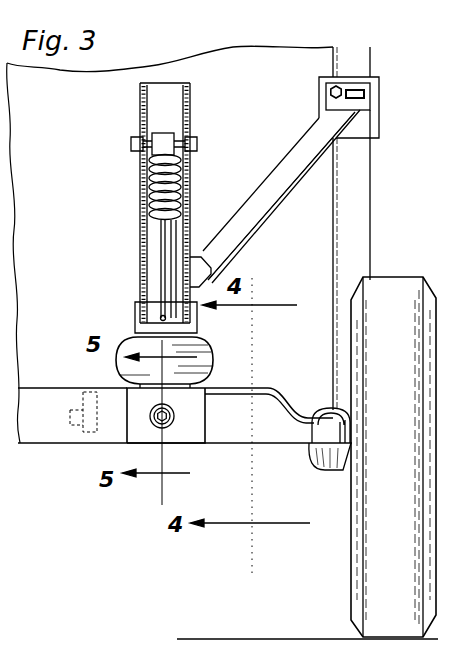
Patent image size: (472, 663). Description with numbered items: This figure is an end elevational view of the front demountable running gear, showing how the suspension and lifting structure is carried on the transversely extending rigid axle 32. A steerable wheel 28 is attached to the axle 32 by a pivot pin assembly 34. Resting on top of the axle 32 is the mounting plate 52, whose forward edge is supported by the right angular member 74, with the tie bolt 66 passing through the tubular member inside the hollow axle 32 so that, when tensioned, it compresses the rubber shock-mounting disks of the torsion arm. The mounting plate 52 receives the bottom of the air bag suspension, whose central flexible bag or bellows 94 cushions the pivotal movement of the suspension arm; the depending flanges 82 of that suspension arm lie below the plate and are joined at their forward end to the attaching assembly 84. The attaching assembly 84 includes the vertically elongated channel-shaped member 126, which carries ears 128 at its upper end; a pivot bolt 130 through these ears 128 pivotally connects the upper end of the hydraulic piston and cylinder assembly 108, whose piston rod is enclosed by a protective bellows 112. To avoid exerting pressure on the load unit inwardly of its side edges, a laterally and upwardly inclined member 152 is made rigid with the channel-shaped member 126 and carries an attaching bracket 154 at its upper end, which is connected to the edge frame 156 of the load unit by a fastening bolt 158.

The steerable wheels 28 is at (369, 567).
The rigid axle 32 is at (47, 422).
The pivot pin assemblies 34 is at (324, 463).
The mounting plate 52 is at (137, 388).
The tie bolt 66 is at (178, 415).
The right angular member 74 is at (188, 440).
The depending flanges 82 is at (229, 651).
The attaching assembly 84 is at (127, 122).
The flexible bag or bellows 94 is at (125, 368).
The hydraulic piston and cylinder assembly 108 is at (154, 257).
The protective bellows 112 is at (152, 178).
The channel-shaped member 126 is at (187, 222).
The ears 128 is at (183, 127).
The pivot bolt 130 is at (131, 145).
The laterally and upwardly inclined member 152 is at (281, 186).
The attaching bracket 154 is at (333, 107).
The edge frame 156 is at (346, 182).
The fastening bolt 158 is at (336, 86).